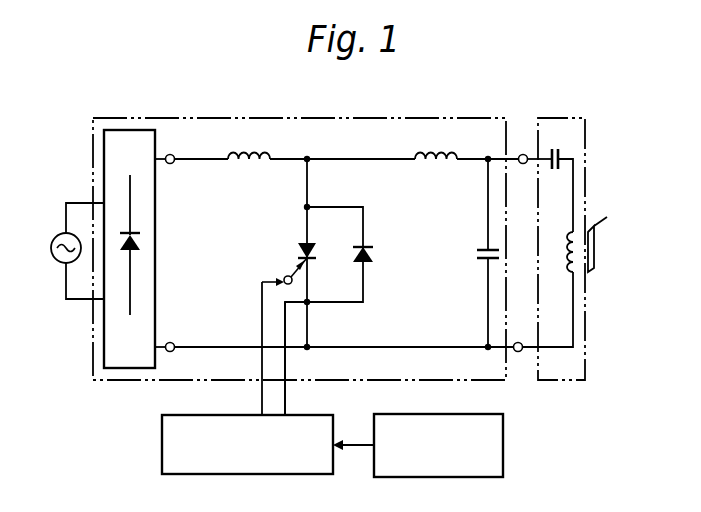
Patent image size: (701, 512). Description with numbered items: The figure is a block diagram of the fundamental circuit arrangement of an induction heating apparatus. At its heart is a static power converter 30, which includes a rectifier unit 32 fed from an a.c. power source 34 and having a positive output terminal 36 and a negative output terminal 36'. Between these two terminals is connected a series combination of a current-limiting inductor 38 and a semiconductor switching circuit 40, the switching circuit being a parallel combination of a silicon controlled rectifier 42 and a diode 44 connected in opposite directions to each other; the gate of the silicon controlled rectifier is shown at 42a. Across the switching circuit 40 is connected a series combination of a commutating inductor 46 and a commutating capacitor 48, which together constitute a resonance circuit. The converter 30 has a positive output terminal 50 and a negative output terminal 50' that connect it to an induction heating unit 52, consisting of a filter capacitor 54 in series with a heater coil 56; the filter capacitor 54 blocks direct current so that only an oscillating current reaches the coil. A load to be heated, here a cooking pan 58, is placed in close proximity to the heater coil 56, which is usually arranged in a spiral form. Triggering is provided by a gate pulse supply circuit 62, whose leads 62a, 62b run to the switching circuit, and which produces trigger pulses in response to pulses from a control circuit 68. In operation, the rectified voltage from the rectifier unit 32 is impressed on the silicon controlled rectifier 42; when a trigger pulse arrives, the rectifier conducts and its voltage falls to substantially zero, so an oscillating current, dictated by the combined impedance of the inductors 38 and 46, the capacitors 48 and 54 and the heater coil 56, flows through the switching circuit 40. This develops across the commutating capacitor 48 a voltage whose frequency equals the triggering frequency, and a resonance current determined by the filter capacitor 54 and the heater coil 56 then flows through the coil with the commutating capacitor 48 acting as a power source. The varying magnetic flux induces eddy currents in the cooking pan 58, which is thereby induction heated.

The static power converter 30 is at (154, 116).
The rectifier unit 32 is at (160, 246).
The a.c. power source 34 is at (60, 234).
The positive output terminal 36 is at (189, 153).
The negative output terminal 36' is at (188, 332).
The current-limiting inductor 38 is at (259, 164).
The semiconductor switching circuit 40 is at (341, 286).
The silicon controlled rectifier 42 is at (298, 250).
The gate electrode of thyristor 42a is at (283, 277).
The diode 44 is at (372, 257).
The commutating inductor 46 is at (438, 168).
The commutating capacitor 48 is at (478, 257).
The positive output terminal 50 is at (521, 123).
The negative output terminal 50' is at (483, 332).
The induction heating unit 52 is at (572, 106).
The filter capacitor 54 is at (554, 170).
The heater coil 56 is at (575, 272).
The cooking pan 58 is at (596, 250).
The gate pulse supply circuit 62 is at (162, 432).
The lead line 62a is at (262, 362).
The lead line 62b is at (288, 362).
The control circuit 68 is at (504, 447).